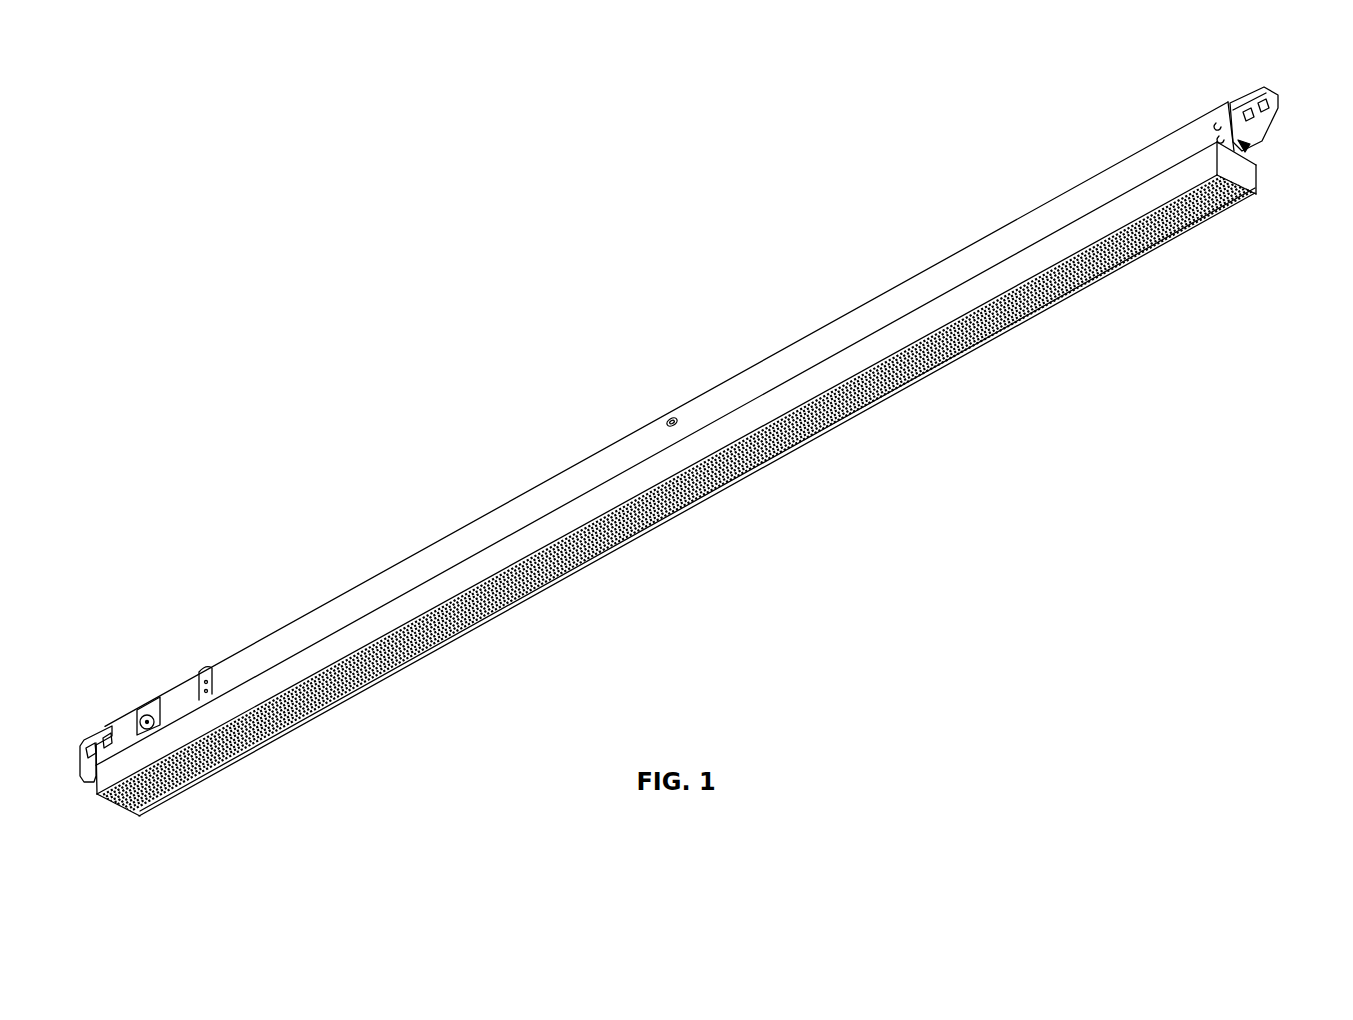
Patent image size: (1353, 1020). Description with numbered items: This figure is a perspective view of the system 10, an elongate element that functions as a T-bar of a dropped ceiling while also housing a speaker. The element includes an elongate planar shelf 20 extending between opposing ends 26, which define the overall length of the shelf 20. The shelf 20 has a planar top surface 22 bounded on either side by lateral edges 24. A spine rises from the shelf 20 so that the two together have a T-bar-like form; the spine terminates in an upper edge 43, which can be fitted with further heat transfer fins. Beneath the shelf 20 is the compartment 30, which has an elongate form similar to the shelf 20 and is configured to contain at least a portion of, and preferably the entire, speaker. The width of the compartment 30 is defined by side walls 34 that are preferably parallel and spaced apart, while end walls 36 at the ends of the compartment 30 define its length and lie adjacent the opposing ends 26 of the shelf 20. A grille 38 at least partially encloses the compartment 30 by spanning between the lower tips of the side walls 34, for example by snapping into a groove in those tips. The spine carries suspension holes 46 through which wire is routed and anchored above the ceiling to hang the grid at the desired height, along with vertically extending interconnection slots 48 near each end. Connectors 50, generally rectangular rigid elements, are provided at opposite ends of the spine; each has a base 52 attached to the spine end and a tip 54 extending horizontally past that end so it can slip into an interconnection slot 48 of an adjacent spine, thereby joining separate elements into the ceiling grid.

The system 10 is at (222, 287).
The shelf 20 is at (1228, 140).
The top surface 22 is at (1250, 160).
The lateral edges 24 is at (1216, 128).
The opposing ends 26 is at (1258, 172).
The compartment 30 is at (548, 520).
The side walls 34 is at (1212, 162).
The end walls 36 is at (1258, 198).
The grille 38 is at (768, 452).
The upper edge 43 is at (443, 552).
The suspension holes 46 is at (668, 418).
The interconnection slots 48 is at (217, 682).
The connectors 50 is at (1245, 88).
The base 52 is at (150, 716).
The tip 54 is at (1280, 98).